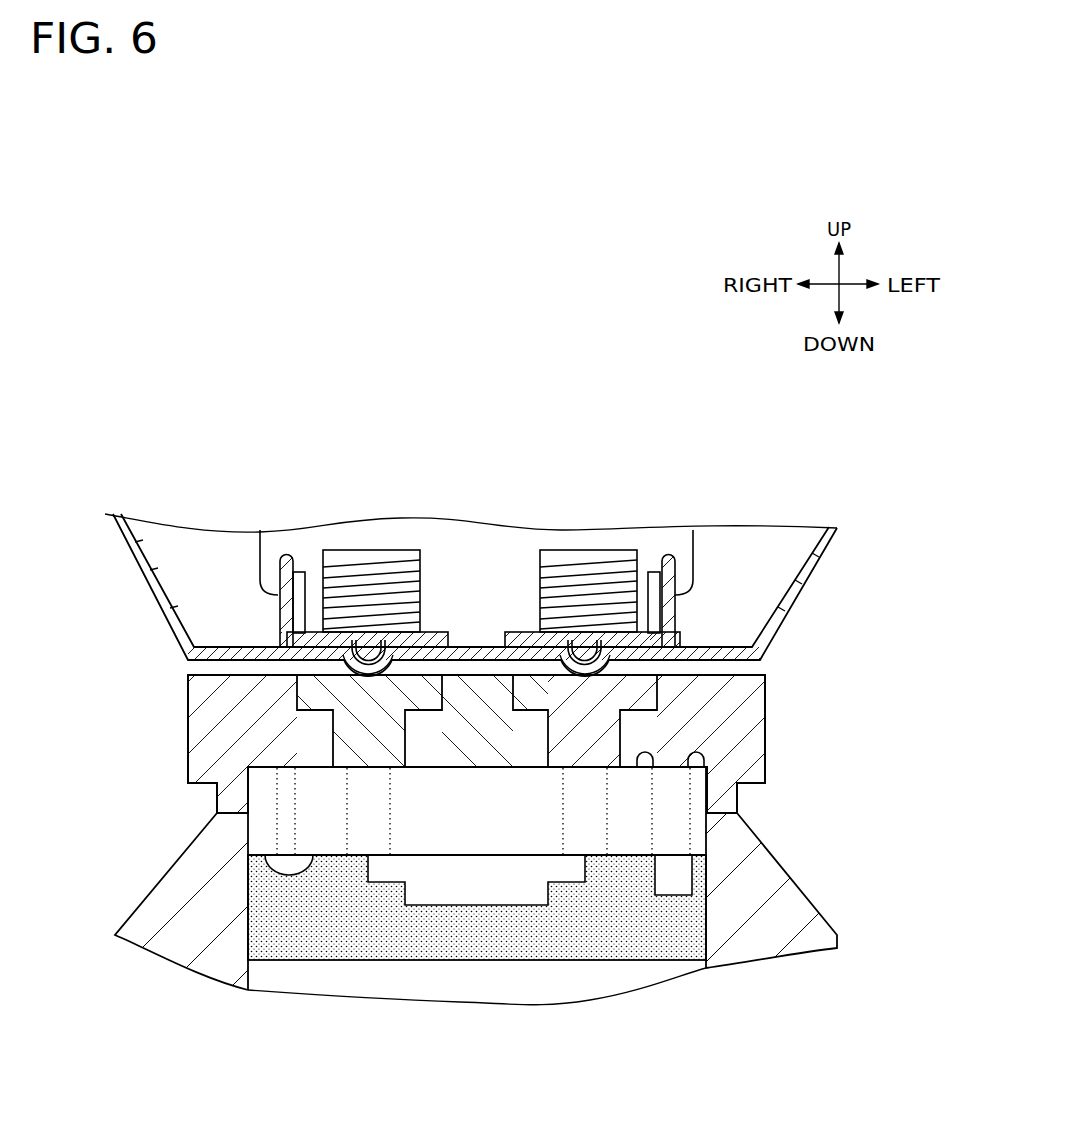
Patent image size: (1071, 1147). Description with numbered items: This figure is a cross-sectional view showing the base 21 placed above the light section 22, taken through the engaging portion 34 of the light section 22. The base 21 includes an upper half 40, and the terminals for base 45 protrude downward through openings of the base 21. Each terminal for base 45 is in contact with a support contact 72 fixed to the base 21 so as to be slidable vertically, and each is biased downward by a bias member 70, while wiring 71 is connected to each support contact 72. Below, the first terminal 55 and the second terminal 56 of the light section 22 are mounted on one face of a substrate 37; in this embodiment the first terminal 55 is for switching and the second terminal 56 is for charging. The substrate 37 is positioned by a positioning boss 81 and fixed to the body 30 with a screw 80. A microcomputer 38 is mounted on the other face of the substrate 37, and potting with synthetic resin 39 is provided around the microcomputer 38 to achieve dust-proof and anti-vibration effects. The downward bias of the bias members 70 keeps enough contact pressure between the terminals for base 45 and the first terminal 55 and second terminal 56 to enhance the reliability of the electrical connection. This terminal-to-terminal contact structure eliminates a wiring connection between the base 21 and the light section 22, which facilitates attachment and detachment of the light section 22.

The base 21 is at (128, 574).
The light section 22 is at (138, 853).
The body 30 is at (796, 884).
The engaging portion 34 is at (767, 723).
The substrate 37 is at (457, 823).
The microcomputer 38 is at (492, 892).
The synthetic resin 39 is at (570, 938).
The upper half 40 is at (807, 573).
The terminals for base 45 is at (299, 572).
The first terminal 55 is at (317, 693).
The second terminal 56 is at (657, 683).
The bias member 70 is at (423, 587).
The wiring 71 is at (255, 557).
The support contact 72 is at (288, 553).
The screw 80 is at (293, 862).
The positioning boss 81 is at (680, 897).